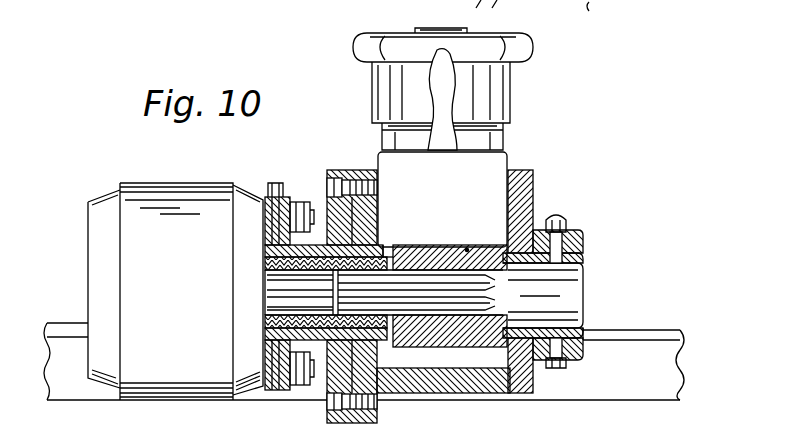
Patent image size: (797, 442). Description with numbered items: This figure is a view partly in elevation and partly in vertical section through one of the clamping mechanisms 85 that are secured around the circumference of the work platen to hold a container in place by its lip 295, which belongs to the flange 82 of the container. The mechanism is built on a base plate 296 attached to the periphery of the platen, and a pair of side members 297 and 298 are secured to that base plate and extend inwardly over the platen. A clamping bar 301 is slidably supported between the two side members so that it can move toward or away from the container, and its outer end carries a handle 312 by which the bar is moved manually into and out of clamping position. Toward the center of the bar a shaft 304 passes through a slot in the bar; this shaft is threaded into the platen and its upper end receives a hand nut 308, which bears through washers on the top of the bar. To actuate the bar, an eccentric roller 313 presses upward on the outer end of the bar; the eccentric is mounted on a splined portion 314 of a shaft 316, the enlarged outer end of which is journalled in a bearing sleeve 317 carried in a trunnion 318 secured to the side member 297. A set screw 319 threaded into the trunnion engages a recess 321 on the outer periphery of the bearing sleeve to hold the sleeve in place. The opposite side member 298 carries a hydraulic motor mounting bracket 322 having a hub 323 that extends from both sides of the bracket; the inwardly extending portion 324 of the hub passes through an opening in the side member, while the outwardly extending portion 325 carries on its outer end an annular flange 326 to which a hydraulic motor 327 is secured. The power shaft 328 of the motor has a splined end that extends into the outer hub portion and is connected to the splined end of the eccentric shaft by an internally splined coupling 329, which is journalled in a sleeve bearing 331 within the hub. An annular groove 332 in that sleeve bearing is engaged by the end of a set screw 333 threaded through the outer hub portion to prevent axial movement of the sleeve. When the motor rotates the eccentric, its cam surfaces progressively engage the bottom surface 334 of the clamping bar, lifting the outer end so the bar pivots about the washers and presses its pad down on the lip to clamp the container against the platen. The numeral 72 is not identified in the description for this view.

The frame 72 is at (601, 15).
The flange 82 is at (662, 333).
The clamping mechanism 85 is at (568, 206).
The lip 295 is at (175, 312).
The base plate 296 is at (458, 378).
The side member 297 is at (523, 180).
The side member 298 is at (368, 170).
The clamping bar 301 is at (495, 162).
The shaft 304 is at (423, 29).
The hand nut 308 is at (508, 74).
The handle 312 is at (442, 85).
The eccentric roller 313 is at (426, 335).
The splined portion 314 is at (444, 298).
The shaft 316 is at (495, 288).
The bearing sleeve 317 is at (583, 259).
The trunnion 318 is at (582, 237).
The set screw 319 is at (551, 363).
The recess 321 is at (583, 332).
The hydraulic motor mounting bracket 322 is at (338, 170).
The hub 323 is at (388, 232).
The inwardly extending portion 324 is at (388, 243).
The outwardly extending portion 325 is at (316, 238).
The annular flange 326 is at (283, 380).
The hydraulic motor 327 is at (133, 222).
The power shaft 328 is at (267, 298).
The internally splined coupling 329 is at (267, 266).
The sleeve bearing 331 is at (395, 258).
The annular groove 332 is at (267, 332).
The set screw 333 is at (267, 340).
The bottom surface 334 is at (468, 250).